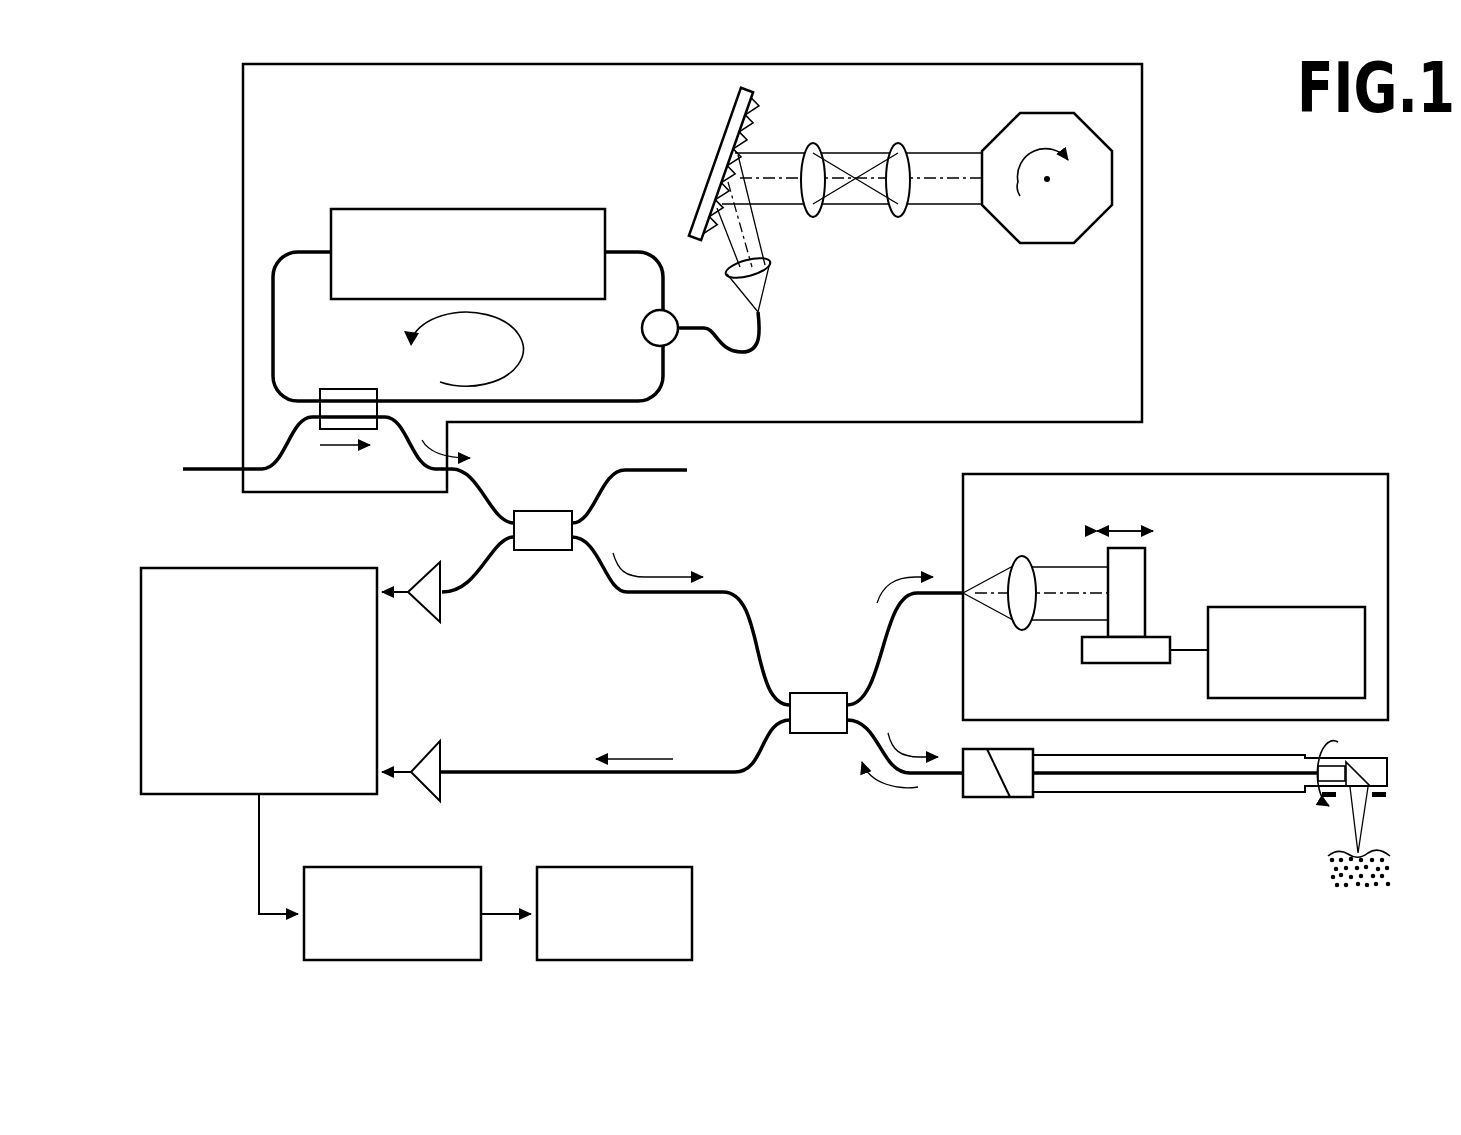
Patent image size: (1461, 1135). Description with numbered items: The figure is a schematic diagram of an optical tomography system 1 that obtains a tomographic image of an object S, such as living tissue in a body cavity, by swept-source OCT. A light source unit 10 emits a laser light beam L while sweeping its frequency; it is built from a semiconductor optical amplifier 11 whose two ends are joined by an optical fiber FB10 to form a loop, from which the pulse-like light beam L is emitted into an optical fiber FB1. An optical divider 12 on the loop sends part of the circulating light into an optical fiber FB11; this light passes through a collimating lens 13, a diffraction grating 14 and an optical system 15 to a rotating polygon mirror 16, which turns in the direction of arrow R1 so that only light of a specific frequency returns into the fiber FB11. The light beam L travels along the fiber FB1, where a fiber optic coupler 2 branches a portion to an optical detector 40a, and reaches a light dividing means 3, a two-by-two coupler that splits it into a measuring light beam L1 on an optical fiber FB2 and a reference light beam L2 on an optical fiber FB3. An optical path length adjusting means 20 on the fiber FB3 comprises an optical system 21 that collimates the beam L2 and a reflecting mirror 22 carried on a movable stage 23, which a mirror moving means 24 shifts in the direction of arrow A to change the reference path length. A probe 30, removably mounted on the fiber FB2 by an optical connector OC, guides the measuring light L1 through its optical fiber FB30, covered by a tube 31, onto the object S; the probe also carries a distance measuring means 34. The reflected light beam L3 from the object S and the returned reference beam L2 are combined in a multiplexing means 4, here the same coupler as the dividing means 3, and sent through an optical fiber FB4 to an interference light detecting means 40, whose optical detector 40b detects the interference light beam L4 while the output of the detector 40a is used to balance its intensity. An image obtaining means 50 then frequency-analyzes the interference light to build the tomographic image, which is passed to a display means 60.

The optical tomography system 1 is at (1204, 191).
The fiber optic coupler 2 is at (553, 552).
The light dividing means 3 is at (813, 733).
The multiplexing means 4 is at (818, 713).
The light source unit 10 is at (1142, 390).
The semiconductor optical amplifier 11 is at (584, 209).
The optical divider 12 is at (668, 346).
The collimating lens 13 is at (770, 265).
The diffraction grating 14 is at (728, 110).
The optical system 15 is at (898, 214).
The rotating polygon mirror 16 is at (1090, 232).
The optical path length adjusting means 20 is at (1388, 505).
The optical system 21 is at (1020, 560).
The reflecting mirror 22 is at (1137, 575).
The movable stage 23 is at (1147, 660).
The mirror moving means 24 is at (1345, 607).
The probe 30 is at (1176, 806).
The tube 31 is at (1262, 792).
The distance measuring means 34 is at (1393, 800).
The interference light detecting means 40 is at (164, 797).
The optical detector 40a is at (442, 606).
The optical detector 40b is at (466, 737).
The image obtaining means 50 is at (329, 867).
The display means 60 is at (560, 867).
The optical fiber FB1 is at (478, 490).
The optical fiber FB2 is at (960, 770).
The optical fiber FB3 is at (960, 590).
The optical fiber FB4 is at (540, 747).
The optical fiber FB10 is at (302, 252).
The optical fiber FB11 is at (758, 350).
The optical fiber FB30 is at (1100, 775).
The laser light beam L is at (562, 505).
The measuring light beam L1 is at (913, 742).
The reference light beam L2 is at (901, 580).
The reflected light beam L3 is at (885, 789).
The interference light beam L4 is at (634, 745).
The optical connector OC is at (985, 797).
The rotation direction R1 is at (1036, 189).
The object S is at (1375, 853).
The movement direction A is at (1128, 530).